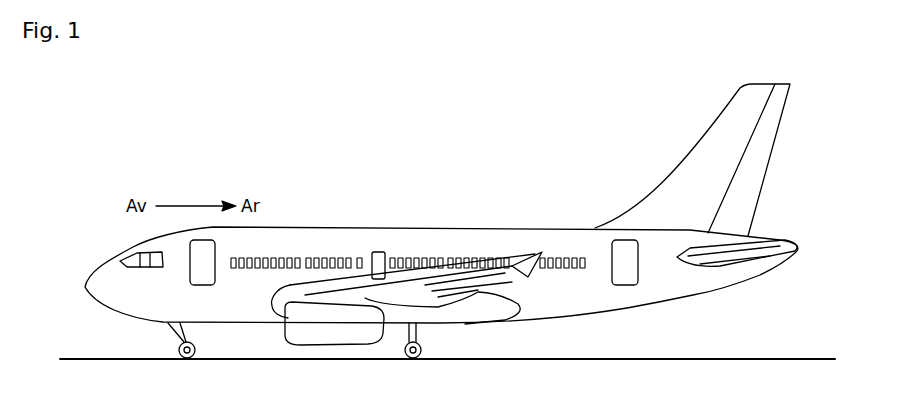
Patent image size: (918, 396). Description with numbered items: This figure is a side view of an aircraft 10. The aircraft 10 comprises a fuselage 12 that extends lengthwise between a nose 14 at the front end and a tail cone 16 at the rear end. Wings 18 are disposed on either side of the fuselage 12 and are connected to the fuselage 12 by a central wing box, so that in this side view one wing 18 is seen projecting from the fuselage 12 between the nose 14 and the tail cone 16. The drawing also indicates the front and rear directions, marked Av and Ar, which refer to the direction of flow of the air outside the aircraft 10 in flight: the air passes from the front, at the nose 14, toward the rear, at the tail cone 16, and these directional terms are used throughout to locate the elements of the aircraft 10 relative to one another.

The aircraft 10 is at (300, 178).
The fuselage 12 is at (392, 226).
The nose 14 is at (85, 286).
The tail cone 16 is at (800, 250).
The wings 18 is at (443, 278).